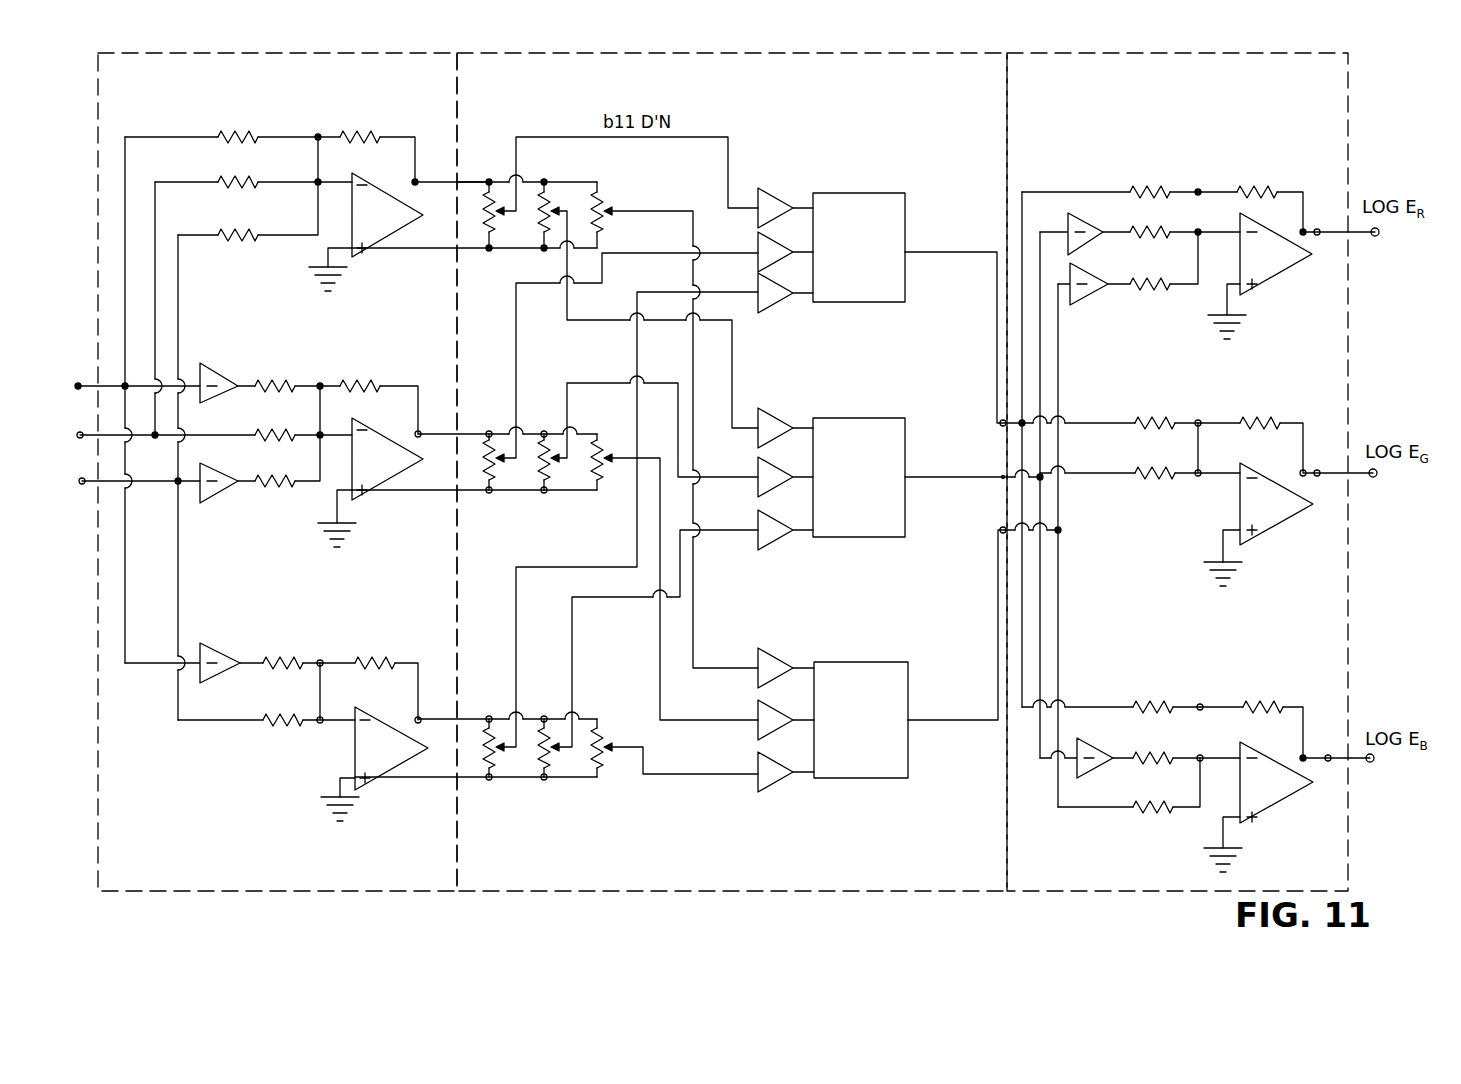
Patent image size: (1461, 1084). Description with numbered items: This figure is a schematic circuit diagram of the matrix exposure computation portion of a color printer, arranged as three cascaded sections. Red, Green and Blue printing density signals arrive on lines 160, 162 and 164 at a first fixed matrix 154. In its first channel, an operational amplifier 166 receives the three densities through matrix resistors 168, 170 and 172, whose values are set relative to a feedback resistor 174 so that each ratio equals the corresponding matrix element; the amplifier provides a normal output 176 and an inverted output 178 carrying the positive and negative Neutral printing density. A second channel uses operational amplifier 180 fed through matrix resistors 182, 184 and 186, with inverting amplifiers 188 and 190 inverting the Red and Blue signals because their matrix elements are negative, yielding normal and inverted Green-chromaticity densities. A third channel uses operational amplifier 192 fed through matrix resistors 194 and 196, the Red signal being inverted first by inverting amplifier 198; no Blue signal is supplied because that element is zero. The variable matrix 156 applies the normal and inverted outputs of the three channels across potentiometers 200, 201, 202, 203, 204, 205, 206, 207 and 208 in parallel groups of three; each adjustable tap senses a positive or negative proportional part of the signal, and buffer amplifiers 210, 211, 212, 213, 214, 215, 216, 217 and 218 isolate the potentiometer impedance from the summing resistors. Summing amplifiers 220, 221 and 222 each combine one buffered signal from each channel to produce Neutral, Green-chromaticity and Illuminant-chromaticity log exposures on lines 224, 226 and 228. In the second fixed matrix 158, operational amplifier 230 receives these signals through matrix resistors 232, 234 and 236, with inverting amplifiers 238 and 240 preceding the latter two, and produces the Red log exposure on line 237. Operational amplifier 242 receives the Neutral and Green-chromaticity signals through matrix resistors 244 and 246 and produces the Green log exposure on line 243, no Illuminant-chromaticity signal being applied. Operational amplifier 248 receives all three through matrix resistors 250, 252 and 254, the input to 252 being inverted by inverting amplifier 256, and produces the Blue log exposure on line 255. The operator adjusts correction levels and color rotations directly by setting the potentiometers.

The first fixed matrix 154 is at (128, 800).
The variable matrix 156 is at (600, 877).
The second fixed matrix 158 is at (1105, 878).
The line 160 is at (79, 383).
The line 162 is at (81, 432).
The line 164 is at (83, 485).
The operational amplifier 166 is at (401, 205).
The matrix resistor 168 is at (222, 135).
The matrix resistor 170 is at (220, 180).
The matrix resistor 172 is at (221, 234).
The feedback resistor 174 is at (370, 135).
The normal output 176 is at (392, 250).
The inverted output 178 is at (463, 183).
The operational amplifier 180 is at (390, 476).
The matrix resistor 182 is at (264, 382).
The matrix resistor 184 is at (258, 440).
The matrix resistor 186 is at (270, 485).
The inverting amplifier 188 is at (210, 365).
The inverting amplifier 190 is at (245, 512).
The operational amplifier 192 is at (361, 756).
The matrix resistor 194 is at (291, 655).
The matrix resistor 196 is at (272, 720).
The inverting amplifier 198 is at (212, 645).
The potentiometer 200 is at (487, 235).
The potentiometer 201 is at (542, 228).
The potentiometer 202 is at (598, 225).
The potentiometer 203 is at (488, 478).
The potentiometer 204 is at (543, 478).
The potentiometer 205 is at (597, 470).
The potentiometer 206 is at (489, 768).
The potentiometer 207 is at (544, 765).
The potentiometer 208 is at (597, 760).
The buffer amplifier 210 is at (795, 157).
The buffer amplifier 211 is at (758, 242).
The buffer amplifier 212 is at (780, 313).
The buffer amplifier 213 is at (812, 383).
The buffer amplifier 214 is at (758, 468).
The buffer amplifier 215 is at (768, 550).
The buffer amplifier 216 is at (766, 650).
The buffer amplifier 217 is at (758, 712).
The buffer amplifier 218 is at (768, 792).
The summing amplifier 220 is at (920, 157).
The summing amplifier 221 is at (895, 395).
The summing amplifier 222 is at (927, 632).
The line 224 is at (998, 424).
The line 226 is at (1000, 478).
The line 228 is at (1000, 532).
The operational amplifier 230 is at (1260, 276).
The matrix resistor 232 is at (1141, 190).
The matrix resistor 234 is at (1145, 230).
The matrix resistor 236 is at (1152, 288).
The line 237 is at (1317, 229).
The inverting amplifier 238 is at (1068, 222).
The inverting amplifier 240 is at (1090, 300).
The operational amplifier 242 is at (1227, 524).
The line 243 is at (1317, 471).
The matrix resistor 244 is at (1156, 423).
The matrix resistor 246 is at (1135, 475).
The operational amplifier 248 is at (1258, 807).
The matrix resistor 250 is at (1146, 707).
The matrix resistor 252 is at (1150, 757).
The matrix resistor 254 is at (1136, 808).
The line 255 is at (1347, 735).
The inverting amplifier 256 is at (1077, 748).